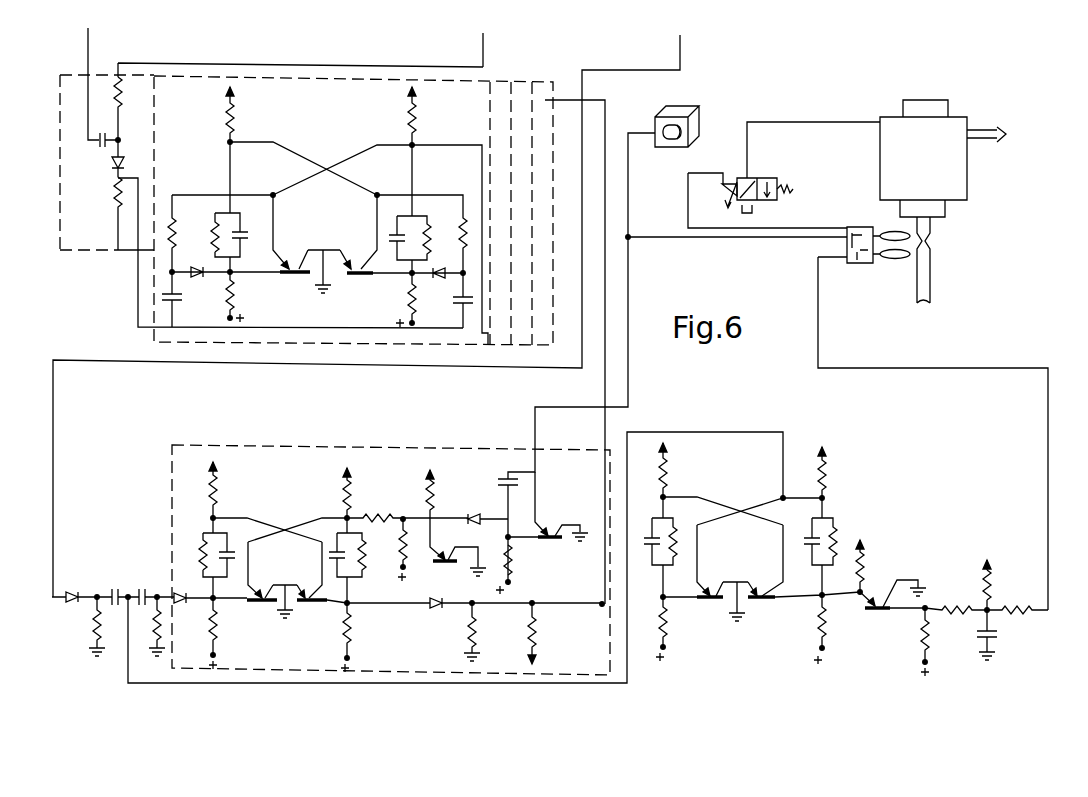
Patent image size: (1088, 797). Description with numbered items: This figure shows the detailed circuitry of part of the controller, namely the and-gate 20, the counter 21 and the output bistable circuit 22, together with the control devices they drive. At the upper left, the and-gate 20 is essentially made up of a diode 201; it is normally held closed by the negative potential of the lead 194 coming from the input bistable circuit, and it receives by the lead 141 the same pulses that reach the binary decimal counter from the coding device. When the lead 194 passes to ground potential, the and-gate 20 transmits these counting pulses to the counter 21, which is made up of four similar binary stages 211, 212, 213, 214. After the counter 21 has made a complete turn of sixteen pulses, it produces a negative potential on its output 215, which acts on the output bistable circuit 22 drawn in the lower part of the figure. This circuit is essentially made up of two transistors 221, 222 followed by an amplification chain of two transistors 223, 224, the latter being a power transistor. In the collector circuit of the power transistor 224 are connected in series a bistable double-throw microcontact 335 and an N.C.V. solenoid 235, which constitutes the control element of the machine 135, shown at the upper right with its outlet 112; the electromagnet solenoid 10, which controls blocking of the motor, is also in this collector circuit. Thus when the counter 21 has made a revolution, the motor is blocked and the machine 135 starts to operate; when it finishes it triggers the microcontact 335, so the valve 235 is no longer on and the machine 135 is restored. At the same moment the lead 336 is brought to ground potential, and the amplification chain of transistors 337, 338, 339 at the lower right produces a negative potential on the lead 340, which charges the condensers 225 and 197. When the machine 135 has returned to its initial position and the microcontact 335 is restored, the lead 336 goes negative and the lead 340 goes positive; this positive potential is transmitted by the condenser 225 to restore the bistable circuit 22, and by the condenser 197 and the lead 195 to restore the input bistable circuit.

The lead 141 is at (88, 52).
The counter 21 is at (320, 82).
The output lead 194 is at (483, 66).
The output 215 is at (588, 100).
The electromagnet solenoid 10 is at (688, 130).
The outlet 112 is at (999, 131).
The N.C.V. solenoid 235 is at (789, 178).
The machine 135 is at (923, 201).
The bistable double-throw microcontact 335 is at (856, 263).
The lead 336 is at (1048, 428).
The and-gate 20 is at (60, 218).
The diode 201 is at (119, 166).
The binary stage 211 is at (317, 207).
The binary stage 212 is at (500, 213).
The binary stage 213 is at (521, 213).
The binary stage 214 is at (542, 213).
The lead 195 is at (53, 414).
The output bistable circuit 22 is at (313, 447).
The condenser 197 is at (115, 589).
The condenser 225 is at (142, 589).
The transistor 221 is at (255, 603).
The transistor 222 is at (313, 603).
The transistor 223 is at (446, 563).
The power transistor 224 is at (552, 540).
The lead 340 is at (583, 683).
The transistor 339 is at (706, 612).
The transistor 338 is at (772, 612).
The transistor 337 is at (878, 614).